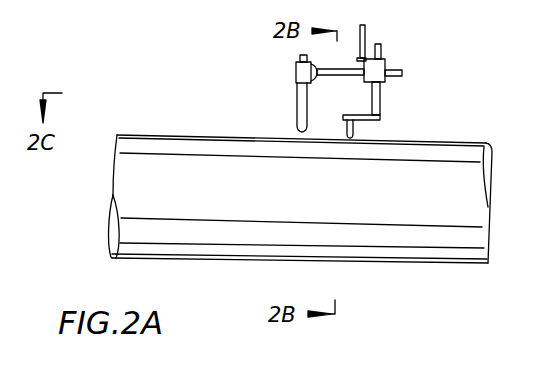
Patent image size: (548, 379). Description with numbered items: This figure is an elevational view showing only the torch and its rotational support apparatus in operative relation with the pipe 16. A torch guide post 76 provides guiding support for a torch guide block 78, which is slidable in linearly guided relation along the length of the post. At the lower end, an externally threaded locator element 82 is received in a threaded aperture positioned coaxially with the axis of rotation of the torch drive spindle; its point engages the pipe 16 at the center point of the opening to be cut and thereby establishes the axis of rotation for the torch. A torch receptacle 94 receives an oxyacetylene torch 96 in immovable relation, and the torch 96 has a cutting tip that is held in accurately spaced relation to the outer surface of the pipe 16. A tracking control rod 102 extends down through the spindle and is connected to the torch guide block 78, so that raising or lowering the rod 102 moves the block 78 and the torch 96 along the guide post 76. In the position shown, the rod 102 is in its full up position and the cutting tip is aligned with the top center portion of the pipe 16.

The pipe 16 is at (428, 257).
The torch guide post 76 is at (384, 97).
The torch guide block 78 is at (379, 63).
The locator element 82 is at (360, 133).
The torch receptacle 94 is at (296, 72).
The oxyacetylene torch 96 is at (299, 108).
The tracking control rod 102 is at (366, 29).